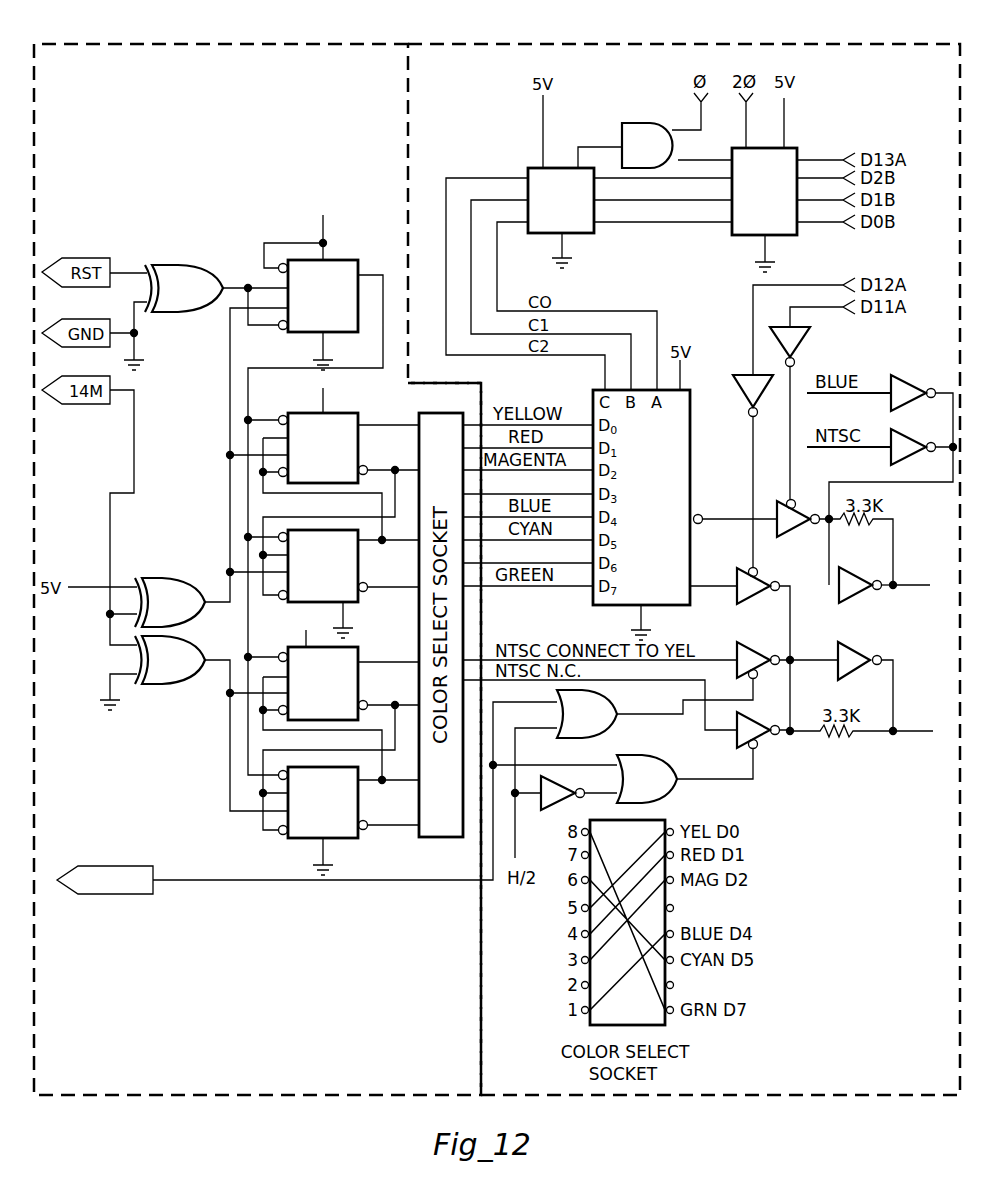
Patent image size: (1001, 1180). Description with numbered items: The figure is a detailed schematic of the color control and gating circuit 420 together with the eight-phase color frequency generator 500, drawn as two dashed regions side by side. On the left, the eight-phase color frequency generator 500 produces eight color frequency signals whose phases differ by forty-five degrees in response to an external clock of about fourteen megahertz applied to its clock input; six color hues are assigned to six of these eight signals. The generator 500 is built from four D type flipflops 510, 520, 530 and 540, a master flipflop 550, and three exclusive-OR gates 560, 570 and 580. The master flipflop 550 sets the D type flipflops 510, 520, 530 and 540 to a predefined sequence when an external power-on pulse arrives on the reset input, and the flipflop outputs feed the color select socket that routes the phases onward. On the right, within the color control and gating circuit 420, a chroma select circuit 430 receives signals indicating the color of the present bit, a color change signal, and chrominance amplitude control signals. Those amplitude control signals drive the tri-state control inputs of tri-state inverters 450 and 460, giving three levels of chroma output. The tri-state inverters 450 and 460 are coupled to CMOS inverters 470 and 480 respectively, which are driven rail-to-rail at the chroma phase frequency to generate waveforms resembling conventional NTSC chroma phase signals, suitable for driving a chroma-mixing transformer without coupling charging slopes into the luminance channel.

The eight-phase color frequency generator 500 is at (218, 44).
The color control and gating circuit 420 is at (612, 44).
The chroma select circuit 430 is at (797, 148).
The tri-state inverter 450 is at (786, 534).
The tri-state inverter 460 is at (740, 578).
The CMOS inverter 470 is at (858, 597).
The CMOS inverter 480 is at (838, 650).
The D type flipflop 510 is at (335, 464).
The D type flipflop 520 is at (335, 582).
The D type flipflop 530 is at (335, 700).
The D type flipflop 540 is at (335, 818).
The master flipflop 550 is at (335, 311).
The exclusive-OR gate 560 is at (198, 302).
The exclusive-OR gate 570 is at (183, 615).
The exclusive-OR gate 580 is at (183, 673).